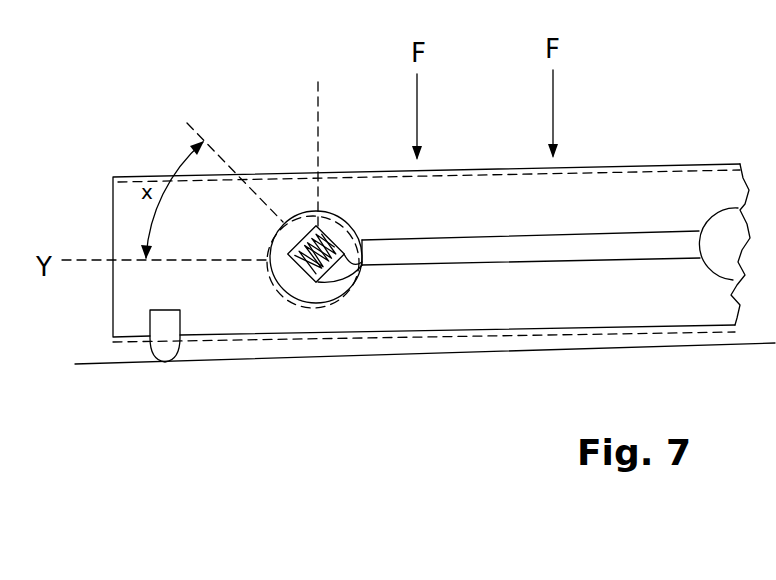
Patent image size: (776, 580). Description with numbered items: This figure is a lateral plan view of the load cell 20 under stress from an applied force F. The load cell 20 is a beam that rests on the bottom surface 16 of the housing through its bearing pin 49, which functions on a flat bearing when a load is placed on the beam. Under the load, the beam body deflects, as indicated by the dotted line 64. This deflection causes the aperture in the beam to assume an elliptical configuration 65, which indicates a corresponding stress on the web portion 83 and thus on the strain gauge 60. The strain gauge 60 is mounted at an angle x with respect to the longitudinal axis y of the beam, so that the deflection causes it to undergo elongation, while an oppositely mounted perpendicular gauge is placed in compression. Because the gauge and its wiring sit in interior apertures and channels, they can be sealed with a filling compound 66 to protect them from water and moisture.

The bottom surface 16 is at (389, 334).
The load cell 20 is at (462, 180).
The bearing pin 49 is at (169, 345).
The strain gauge 60 is at (280, 242).
The dotted line 64 is at (683, 173).
The elliptical configuration 65 is at (308, 190).
The filling compound 66 is at (624, 243).
The web portion 83 is at (305, 292).